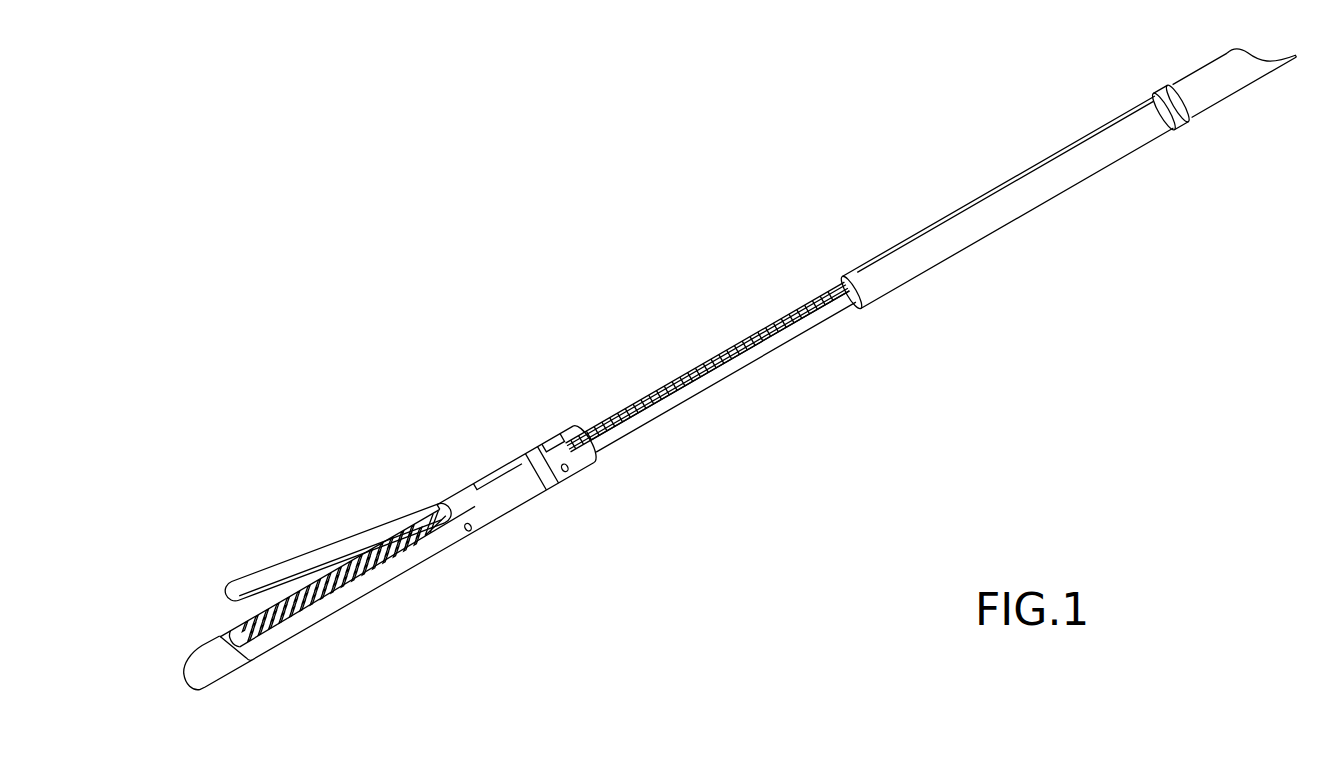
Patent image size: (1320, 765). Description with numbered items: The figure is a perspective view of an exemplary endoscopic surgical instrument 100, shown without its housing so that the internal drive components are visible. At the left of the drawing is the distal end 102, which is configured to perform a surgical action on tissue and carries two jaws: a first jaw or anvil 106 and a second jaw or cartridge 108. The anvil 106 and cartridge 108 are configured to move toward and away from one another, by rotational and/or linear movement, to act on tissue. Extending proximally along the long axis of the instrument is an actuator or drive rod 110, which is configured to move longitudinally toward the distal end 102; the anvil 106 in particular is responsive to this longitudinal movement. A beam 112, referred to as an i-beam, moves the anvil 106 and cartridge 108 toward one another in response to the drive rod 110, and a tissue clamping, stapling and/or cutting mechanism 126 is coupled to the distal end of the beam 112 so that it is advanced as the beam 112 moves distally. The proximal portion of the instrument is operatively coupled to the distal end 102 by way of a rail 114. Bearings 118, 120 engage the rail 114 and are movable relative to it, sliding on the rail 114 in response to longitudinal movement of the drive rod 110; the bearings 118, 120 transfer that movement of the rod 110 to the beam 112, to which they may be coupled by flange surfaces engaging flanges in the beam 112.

The endoscopic surgical instrument 100 is at (434, 266).
The distal end 102 is at (205, 662).
The anvil 106 is at (323, 554).
The cartridge 108 is at (327, 613).
The drive rod 110 is at (1228, 88).
The beam 112 is at (650, 395).
The rail 114 is at (733, 368).
The bearing 118 is at (977, 243).
The bearing 120 is at (843, 273).
The tissue clamping, stapling and/or cutting mechanism 126 is at (497, 470).